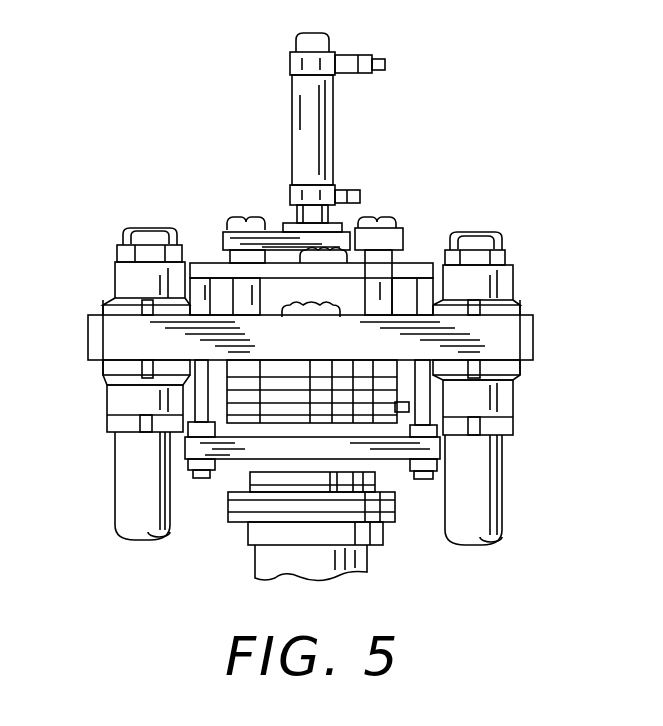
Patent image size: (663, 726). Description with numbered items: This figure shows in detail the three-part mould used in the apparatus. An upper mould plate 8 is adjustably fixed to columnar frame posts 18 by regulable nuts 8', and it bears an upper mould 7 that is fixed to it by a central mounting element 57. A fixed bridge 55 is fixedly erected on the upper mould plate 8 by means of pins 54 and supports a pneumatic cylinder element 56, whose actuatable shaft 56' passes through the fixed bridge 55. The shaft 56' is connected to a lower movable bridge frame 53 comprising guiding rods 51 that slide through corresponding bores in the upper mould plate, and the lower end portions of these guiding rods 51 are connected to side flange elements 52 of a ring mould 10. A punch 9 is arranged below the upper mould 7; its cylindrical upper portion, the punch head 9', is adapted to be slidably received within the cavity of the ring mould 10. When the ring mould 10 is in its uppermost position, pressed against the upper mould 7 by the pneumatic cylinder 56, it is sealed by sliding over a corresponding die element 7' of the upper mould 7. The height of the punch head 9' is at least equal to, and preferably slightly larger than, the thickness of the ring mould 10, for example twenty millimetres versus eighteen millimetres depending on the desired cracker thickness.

The upper mould 7 is at (140, 396).
The die element 7' is at (133, 411).
The upper mould plate 8 is at (338, 337).
The regulable nuts 8' is at (512, 324).
The punch 9 is at (286, 543).
The punch head 9' is at (407, 484).
The ring mould 10 is at (242, 442).
The columnar frame posts 18 is at (502, 515).
The guiding rods 51 is at (510, 409).
The side flange elements 52 is at (192, 448).
The lower movable bridge frame 53 is at (200, 258).
The pins 54 is at (392, 295).
The fixed bridge 55 is at (405, 242).
The pneumatic cylinder element 56 is at (360, 132).
The actuatable shaft 56' is at (330, 207).
The central mounting element 57 is at (283, 316).